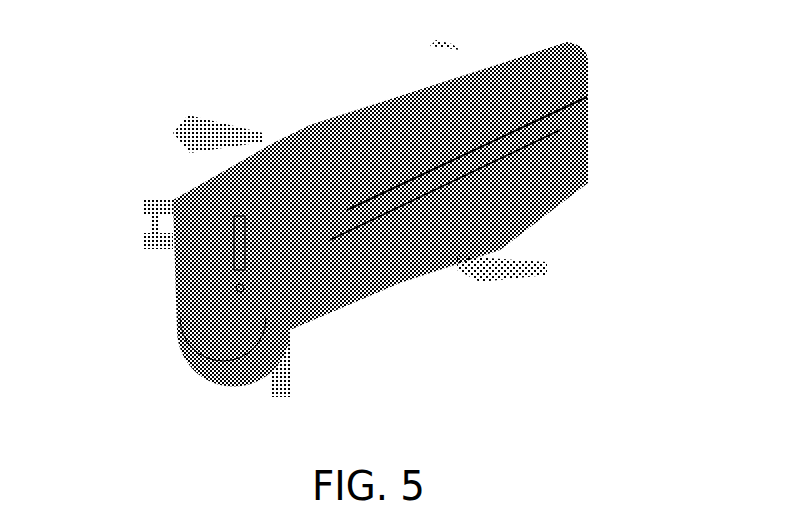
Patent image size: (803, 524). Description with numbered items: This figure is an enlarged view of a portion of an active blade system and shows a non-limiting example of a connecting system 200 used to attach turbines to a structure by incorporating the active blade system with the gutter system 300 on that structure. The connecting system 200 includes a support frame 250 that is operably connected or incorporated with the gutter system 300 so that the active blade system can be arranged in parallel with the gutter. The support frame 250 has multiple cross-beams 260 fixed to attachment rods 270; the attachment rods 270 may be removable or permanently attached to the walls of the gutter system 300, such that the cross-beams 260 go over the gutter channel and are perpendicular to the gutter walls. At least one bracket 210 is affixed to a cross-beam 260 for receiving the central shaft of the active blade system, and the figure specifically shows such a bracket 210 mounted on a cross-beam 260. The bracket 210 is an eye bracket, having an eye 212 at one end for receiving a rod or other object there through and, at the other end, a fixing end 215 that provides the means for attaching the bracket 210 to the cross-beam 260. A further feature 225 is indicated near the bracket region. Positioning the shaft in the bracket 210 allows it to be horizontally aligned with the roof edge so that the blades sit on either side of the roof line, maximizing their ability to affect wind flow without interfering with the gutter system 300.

The connecting system 200 is at (280, 307).
The gutter system 300 is at (593, 41).
The support frame 250 is at (413, 218).
The attachment rods 270 is at (303, 237).
The cross-beams 260 is at (262, 297).
The bracket 210 is at (226, 263).
The eye 212 is at (235, 230).
The base 225 is at (237, 292).
The fixing end 215 is at (240, 290).